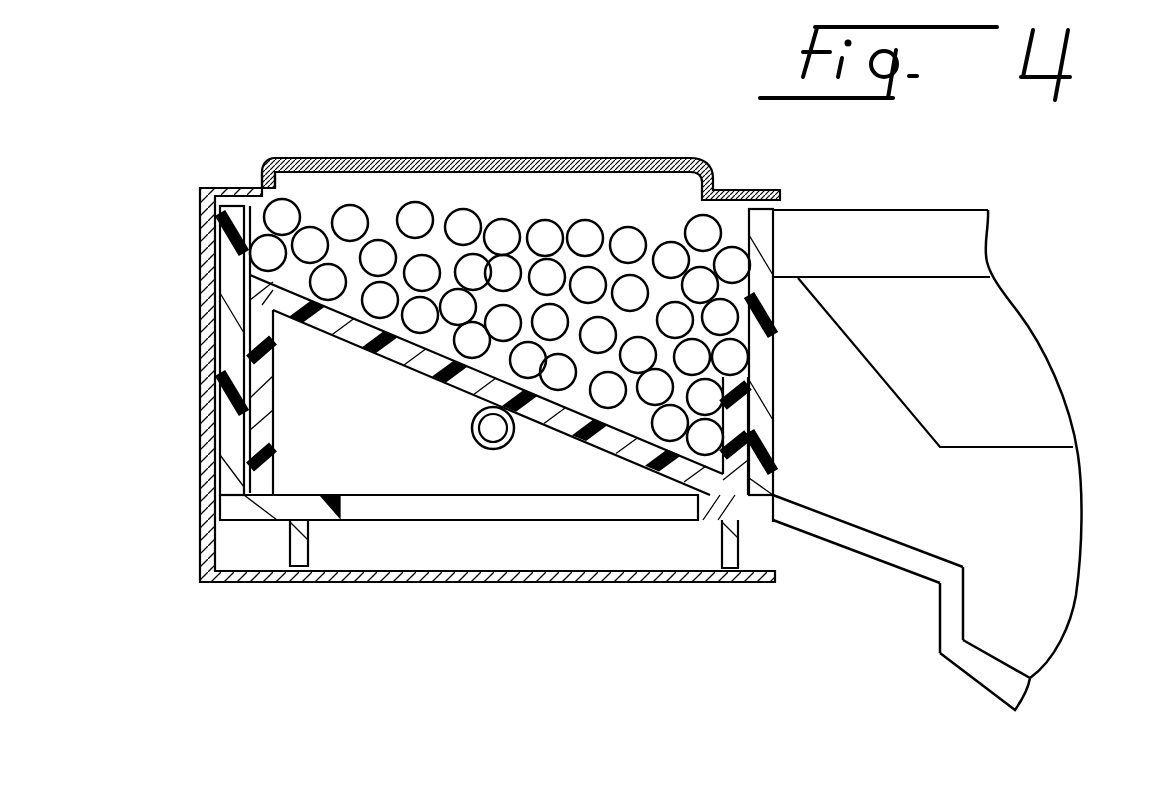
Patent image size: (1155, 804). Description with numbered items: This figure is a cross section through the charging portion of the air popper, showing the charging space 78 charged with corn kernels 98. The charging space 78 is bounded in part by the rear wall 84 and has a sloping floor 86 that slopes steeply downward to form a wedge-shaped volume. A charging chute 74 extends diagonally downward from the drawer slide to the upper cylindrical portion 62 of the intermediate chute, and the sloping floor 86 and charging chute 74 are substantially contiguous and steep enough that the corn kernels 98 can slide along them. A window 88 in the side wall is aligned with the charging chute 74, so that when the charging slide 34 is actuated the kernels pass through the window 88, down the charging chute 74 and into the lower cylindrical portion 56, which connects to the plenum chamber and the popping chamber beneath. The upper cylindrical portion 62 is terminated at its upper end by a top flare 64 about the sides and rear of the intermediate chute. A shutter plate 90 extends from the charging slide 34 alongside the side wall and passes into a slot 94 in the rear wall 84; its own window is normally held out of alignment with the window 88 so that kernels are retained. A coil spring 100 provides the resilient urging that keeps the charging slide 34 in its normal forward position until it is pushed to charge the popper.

The charging slide 34 is at (393, 352).
The lower cylindrical portion 56 is at (987, 652).
The upper cylindrical portion 62 is at (968, 600).
The top flare 64 is at (968, 313).
The charging chute 74 is at (853, 522).
The charging space 78 is at (317, 207).
The rear wall 84 is at (233, 352).
The sloping floor 86 is at (441, 347).
The window 88 is at (780, 262).
The shutter plate 90 is at (743, 410).
The slot 94 is at (740, 428).
The corn kernels 98 is at (278, 212).
The coil spring 100 is at (475, 441).